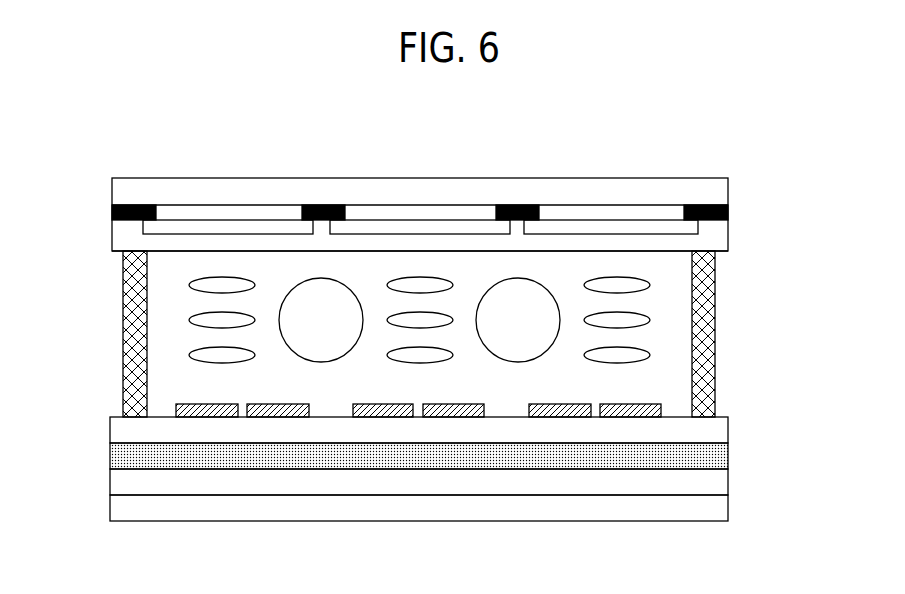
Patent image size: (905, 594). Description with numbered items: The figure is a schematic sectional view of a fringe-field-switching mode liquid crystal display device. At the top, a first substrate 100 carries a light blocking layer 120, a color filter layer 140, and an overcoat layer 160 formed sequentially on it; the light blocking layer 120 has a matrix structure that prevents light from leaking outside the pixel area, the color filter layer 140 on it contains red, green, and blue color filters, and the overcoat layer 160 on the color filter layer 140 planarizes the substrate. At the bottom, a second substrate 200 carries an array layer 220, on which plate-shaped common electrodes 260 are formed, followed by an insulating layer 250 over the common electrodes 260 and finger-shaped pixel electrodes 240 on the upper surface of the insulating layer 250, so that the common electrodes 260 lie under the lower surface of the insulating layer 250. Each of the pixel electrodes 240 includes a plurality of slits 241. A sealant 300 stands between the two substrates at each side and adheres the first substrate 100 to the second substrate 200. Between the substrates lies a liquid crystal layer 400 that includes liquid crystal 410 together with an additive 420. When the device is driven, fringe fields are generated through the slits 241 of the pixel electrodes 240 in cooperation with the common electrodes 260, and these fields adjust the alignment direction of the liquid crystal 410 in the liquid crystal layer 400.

The first substrate 100 is at (730, 194).
The light blocking layer 120 is at (517, 205).
The color filter layer 140 is at (641, 216).
The overcoat layer 160 is at (730, 234).
The sealant 300 is at (124, 302).
The liquid crystal layer 400 is at (790, 295).
The liquid crystal 410 is at (650, 320).
The additive 420 is at (538, 358).
The slits 241 is at (243, 407).
The pixel electrodes 240 is at (197, 417).
The insulating layer 250 is at (728, 428).
The common electrodes 260 is at (728, 455).
The array layer 220 is at (728, 481).
The second substrate 200 is at (728, 507).